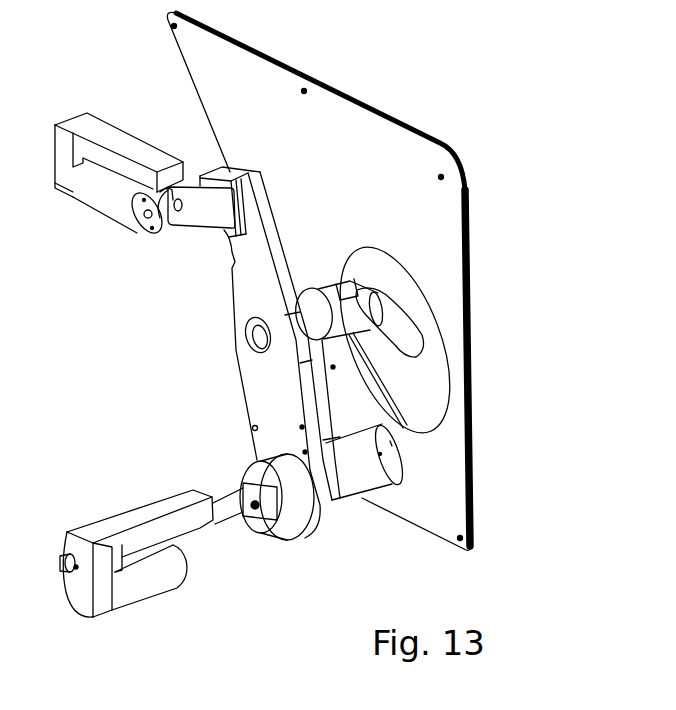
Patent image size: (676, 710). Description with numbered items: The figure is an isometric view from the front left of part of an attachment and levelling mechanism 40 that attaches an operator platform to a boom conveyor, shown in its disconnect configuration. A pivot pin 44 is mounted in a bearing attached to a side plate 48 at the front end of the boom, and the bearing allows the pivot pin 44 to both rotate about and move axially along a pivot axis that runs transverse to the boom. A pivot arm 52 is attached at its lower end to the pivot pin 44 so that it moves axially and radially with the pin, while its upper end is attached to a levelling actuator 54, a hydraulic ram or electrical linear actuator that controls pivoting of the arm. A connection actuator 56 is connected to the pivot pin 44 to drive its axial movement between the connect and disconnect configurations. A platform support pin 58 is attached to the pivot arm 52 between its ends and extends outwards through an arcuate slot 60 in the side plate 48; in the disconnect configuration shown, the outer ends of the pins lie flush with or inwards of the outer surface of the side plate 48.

The attachment and levelling mechanism 40 is at (312, 314).
The pivot pin 44 is at (352, 490).
The side plate 48 is at (350, 118).
The pivot arm 52 is at (245, 288).
The levelling actuator 54 is at (103, 207).
The connection actuator 56 is at (107, 523).
The platform support pin 58 is at (322, 287).
The arcuate slot 60 is at (393, 290).